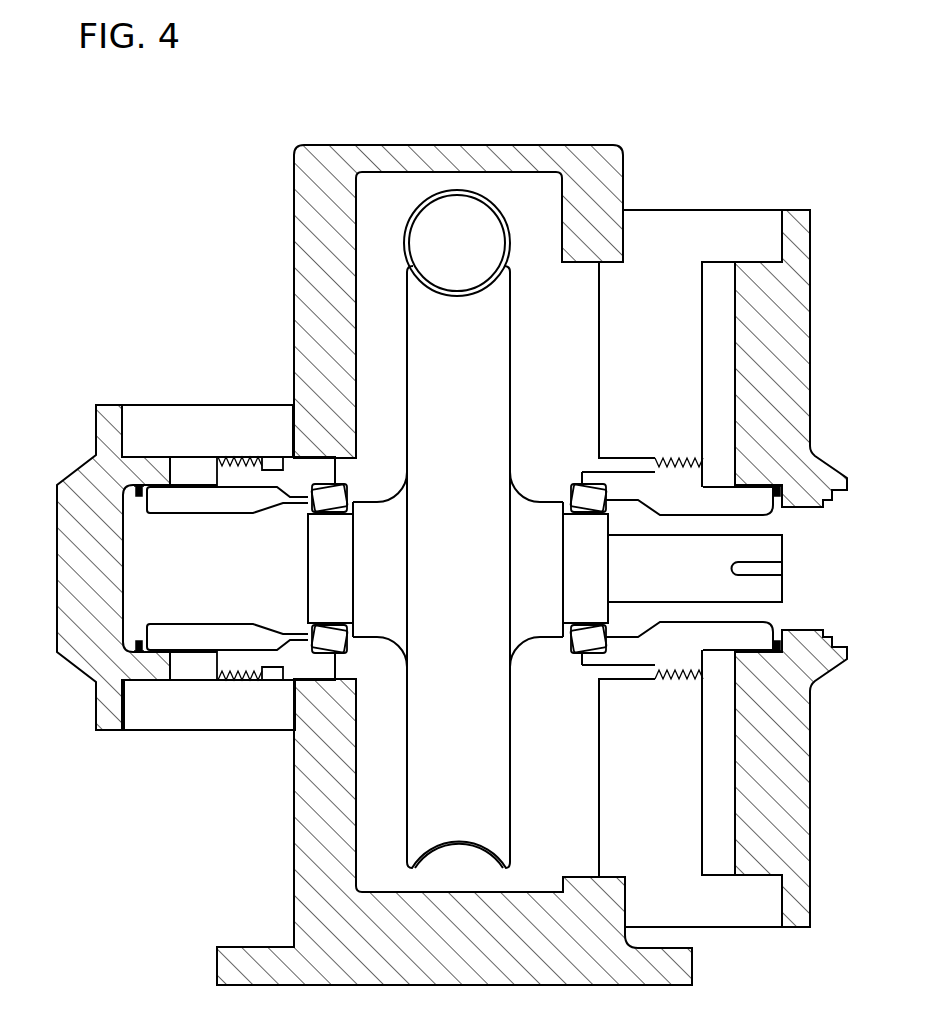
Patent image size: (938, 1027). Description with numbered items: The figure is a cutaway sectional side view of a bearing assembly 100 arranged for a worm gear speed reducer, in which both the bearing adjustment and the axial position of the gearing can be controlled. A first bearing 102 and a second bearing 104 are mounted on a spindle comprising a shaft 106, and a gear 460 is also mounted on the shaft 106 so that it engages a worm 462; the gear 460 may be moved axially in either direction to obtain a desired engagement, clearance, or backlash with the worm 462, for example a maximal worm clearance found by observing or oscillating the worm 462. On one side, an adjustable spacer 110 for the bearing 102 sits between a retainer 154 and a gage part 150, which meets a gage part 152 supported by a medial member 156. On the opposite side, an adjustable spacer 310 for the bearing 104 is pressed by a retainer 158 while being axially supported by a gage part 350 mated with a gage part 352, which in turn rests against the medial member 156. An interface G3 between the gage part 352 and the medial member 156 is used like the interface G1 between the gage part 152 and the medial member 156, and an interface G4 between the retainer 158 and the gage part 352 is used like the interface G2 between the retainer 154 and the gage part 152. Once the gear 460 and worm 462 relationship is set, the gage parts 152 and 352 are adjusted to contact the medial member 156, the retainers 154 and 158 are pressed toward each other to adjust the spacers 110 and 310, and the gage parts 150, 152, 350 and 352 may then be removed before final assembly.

The bearing assembly 100 is at (760, 568).
The first bearing 102 is at (564, 529).
The second bearing 104 is at (354, 529).
The shaft 106 is at (469, 593).
The adjustable spacer 110 is at (803, 568).
The gage part 150 is at (713, 568).
The gage part 152 is at (707, 806).
The retainer 154 is at (805, 568).
The medial member 156 is at (454, 546).
The retainer 158 is at (100, 567).
The adjustable spacer 310 is at (159, 568).
The gage part 350 is at (227, 568).
The gage part 352 is at (209, 726).
The gear 460 is at (493, 567).
The worm 462 is at (476, 235).
The interface G1 is at (653, 183).
The interface G2 is at (814, 209).
The interface G3 is at (262, 408).
The interface G4 is at (90, 408).